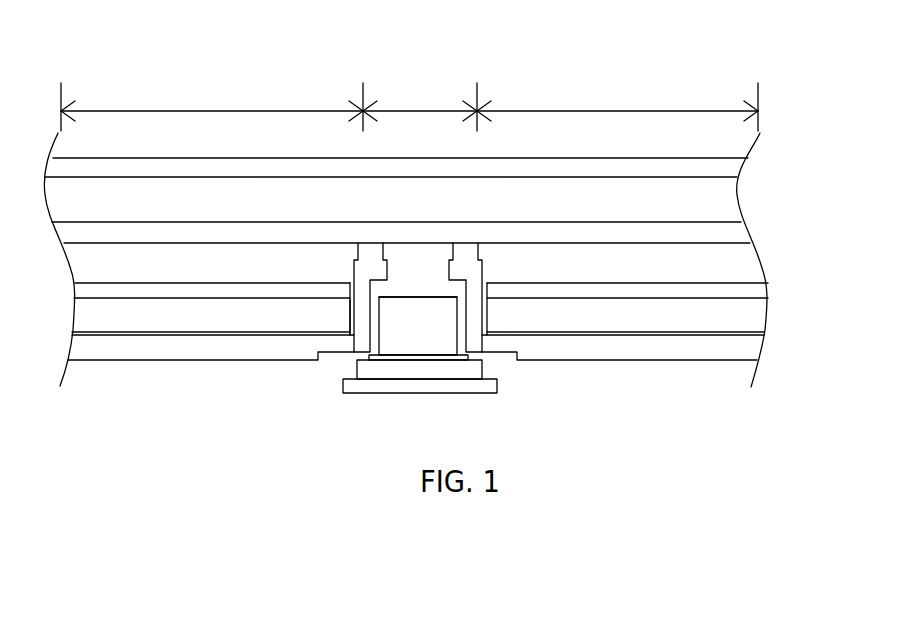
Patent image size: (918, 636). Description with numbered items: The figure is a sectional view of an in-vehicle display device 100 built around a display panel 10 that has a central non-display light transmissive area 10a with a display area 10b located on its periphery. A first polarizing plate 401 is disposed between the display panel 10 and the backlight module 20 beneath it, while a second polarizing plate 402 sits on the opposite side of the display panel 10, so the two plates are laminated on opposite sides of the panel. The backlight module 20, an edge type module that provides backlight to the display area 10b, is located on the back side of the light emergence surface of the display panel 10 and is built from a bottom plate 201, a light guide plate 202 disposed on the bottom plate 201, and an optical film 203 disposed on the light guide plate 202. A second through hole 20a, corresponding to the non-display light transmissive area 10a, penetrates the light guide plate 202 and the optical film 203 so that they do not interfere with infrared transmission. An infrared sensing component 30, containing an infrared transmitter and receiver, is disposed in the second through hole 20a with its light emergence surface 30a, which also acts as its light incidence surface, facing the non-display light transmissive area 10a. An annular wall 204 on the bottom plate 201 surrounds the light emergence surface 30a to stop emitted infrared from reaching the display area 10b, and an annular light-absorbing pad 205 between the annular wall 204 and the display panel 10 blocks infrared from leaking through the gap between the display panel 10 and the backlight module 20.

The in-vehicle display device 100 is at (422, 33).
The display panel 10 is at (727, 209).
The non-display light transmissive area 10a is at (420, 106).
The display area 10b is at (409, 106).
The first polarizing plate 401 is at (730, 240).
The second polarizing plate 402 is at (727, 172).
The annular light-absorbing pad 205 is at (468, 256).
The backlight module 20 is at (836, 293).
The bottom plate 201 is at (733, 346).
The light guide plate 202 is at (733, 322).
The optical film 203 is at (733, 297).
The second through hole 20a is at (350, 321).
The annular wall 204 is at (368, 318).
The infrared sensing component 30 is at (417, 338).
The light emergence surface 30a is at (429, 302).